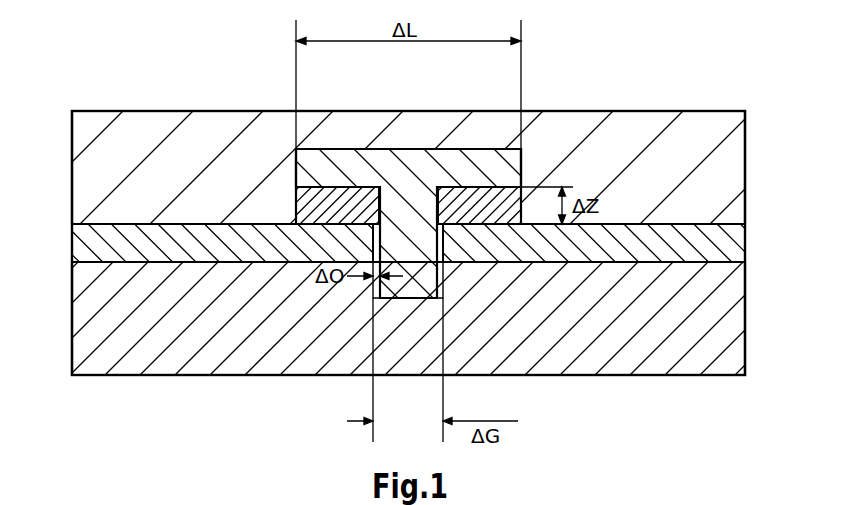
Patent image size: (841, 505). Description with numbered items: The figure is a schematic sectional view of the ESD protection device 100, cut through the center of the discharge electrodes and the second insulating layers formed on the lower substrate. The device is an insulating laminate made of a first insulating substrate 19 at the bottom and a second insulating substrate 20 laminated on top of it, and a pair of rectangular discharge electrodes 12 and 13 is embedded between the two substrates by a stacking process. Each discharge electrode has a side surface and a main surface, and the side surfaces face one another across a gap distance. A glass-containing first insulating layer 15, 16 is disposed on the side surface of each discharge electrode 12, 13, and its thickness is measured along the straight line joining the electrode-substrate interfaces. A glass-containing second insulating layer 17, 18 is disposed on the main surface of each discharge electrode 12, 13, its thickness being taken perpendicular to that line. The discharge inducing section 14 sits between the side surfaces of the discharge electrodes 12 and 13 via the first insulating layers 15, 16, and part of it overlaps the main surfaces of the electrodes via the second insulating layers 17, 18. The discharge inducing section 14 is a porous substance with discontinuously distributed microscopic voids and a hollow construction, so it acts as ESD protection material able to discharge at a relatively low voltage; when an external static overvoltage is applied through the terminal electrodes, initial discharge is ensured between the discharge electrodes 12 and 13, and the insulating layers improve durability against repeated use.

The ESD protection device 100 is at (93, 39).
The second insulating substrate 20 is at (92, 122).
The discharge electrode 12 is at (87, 243).
The discharge electrode 13 is at (730, 250).
The discharge inducing section 14 is at (408, 178).
The first insulating layer 15 is at (372, 296).
The first insulating layer 16 is at (445, 297).
The second insulating layer 17 is at (310, 205).
The second insulating layer 18 is at (512, 202).
The first insulating substrate 19 is at (95, 362).